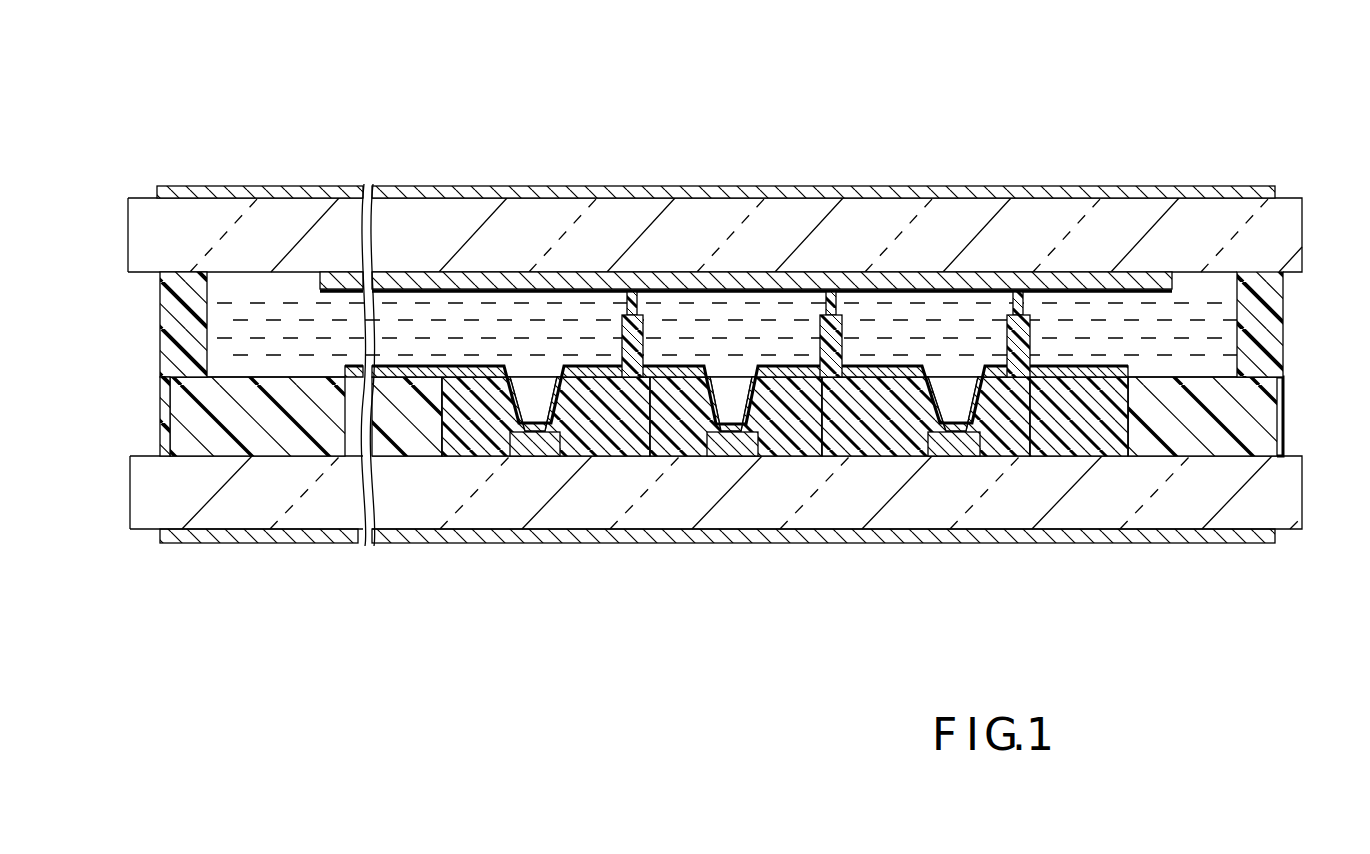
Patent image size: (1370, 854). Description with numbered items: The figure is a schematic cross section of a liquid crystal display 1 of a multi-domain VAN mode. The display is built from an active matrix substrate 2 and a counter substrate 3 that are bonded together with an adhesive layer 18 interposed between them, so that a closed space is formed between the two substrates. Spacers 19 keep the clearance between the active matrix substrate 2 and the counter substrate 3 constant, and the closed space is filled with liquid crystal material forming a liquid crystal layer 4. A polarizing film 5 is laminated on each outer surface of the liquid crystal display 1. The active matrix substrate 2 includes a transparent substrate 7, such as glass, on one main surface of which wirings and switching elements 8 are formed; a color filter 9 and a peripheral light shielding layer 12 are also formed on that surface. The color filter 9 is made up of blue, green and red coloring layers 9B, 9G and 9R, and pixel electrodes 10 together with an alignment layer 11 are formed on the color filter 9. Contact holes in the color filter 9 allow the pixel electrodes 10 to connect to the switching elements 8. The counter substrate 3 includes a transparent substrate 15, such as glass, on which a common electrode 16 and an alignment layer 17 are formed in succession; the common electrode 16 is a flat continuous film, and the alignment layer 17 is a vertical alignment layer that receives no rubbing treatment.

The liquid crystal display 1 is at (1200, 90).
The active matrix substrate 2 is at (716, 483).
The counter substrate 3 is at (748, 365).
The liquid crystal layer 4 is at (484, 312).
The polarizing film 5 is at (259, 197).
The transparent substrate 7 is at (1296, 480).
The switching elements 8 is at (941, 470).
The color filter 9 is at (774, 517).
The green coloring layer 9G is at (460, 456).
The blue coloring layer 9B is at (672, 456).
The red coloring layer 9R is at (926, 488).
The pixel electrodes 10 is at (1130, 372).
The alignment layer 11 is at (1115, 365).
The peripheral light shielding layer 12 is at (1272, 416).
The transparent substrate 15 is at (1290, 205).
The common electrode 16 is at (322, 283).
The alignment layer 17 is at (334, 299).
The adhesive layer 18 is at (168, 320).
The spacers 19 is at (653, 330).